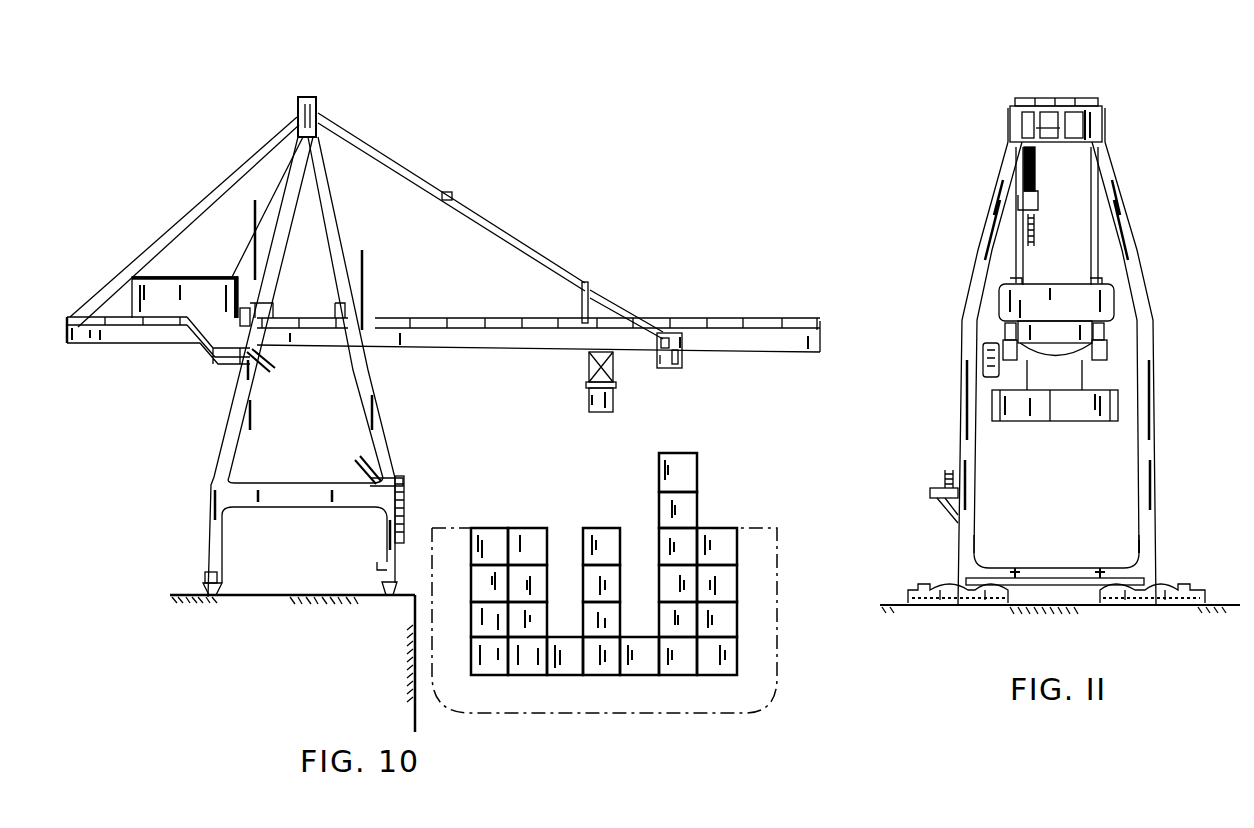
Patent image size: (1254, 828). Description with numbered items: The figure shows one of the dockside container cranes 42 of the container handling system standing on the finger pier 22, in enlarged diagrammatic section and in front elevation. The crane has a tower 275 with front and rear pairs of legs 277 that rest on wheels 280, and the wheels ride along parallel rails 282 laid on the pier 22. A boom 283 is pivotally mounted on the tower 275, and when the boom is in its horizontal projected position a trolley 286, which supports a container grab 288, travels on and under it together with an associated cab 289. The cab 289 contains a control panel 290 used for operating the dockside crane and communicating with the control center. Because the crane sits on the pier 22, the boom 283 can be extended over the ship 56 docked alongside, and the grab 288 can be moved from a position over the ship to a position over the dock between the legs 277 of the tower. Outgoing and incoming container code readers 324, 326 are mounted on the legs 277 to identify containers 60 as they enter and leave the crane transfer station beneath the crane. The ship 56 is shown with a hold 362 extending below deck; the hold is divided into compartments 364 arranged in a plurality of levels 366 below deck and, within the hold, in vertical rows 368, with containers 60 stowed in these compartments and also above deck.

In FIG. 10, the dockside container crane 42 is at (290, 116).
In FIG. 11, the dockside container crane 42 is at (1005, 110).
In FIG. 10, the tower 275 is at (276, 187).
In FIG. 11, the tower 275 is at (1128, 225).
In FIG. 10, the boom 283 is at (398, 316).
In FIG. 11, the boom 283 is at (1003, 338).
In FIG. 11, the trolley 286 is at (1112, 345).
In FIG. 10, the container grab 288 is at (590, 366).
In FIG. 11, the container grab 288 is at (1120, 392).
In FIG. 10, the cab 289 is at (683, 357).
In FIG. 10, the control panel 290 is at (662, 371).
In FIG. 10, the container 60 is at (600, 412).
In FIG. 11, the container 60 is at (1073, 415).
In FIG. 10, the legs 277 is at (214, 520).
In FIG. 11, the legs 277 is at (968, 463).
In FIG. 10, the wheels 280 is at (214, 593).
In FIG. 11, the wheels 280 is at (925, 607).
In FIG. 10, the rails 282 is at (218, 598).
In FIG. 11, the rails 282 is at (892, 605).
In FIG. 10, the outgoing container code reader 324 is at (377, 562).
In FIG. 11, the outgoing container code reader 324 is at (955, 547).
In FIG. 11, the incoming container code reader 326 is at (1138, 547).
In FIG. 10, the finger pier 22 is at (416, 700).
In FIG. 10, the compartments 364 is at (583, 530).
In FIG. 10, the levels 366 is at (740, 620).
In FIG. 10, the vertical rows 368 is at (690, 677).
In FIG. 10, the ship 56 is at (777, 527).
In FIG. 10, the hold 362 is at (782, 542).